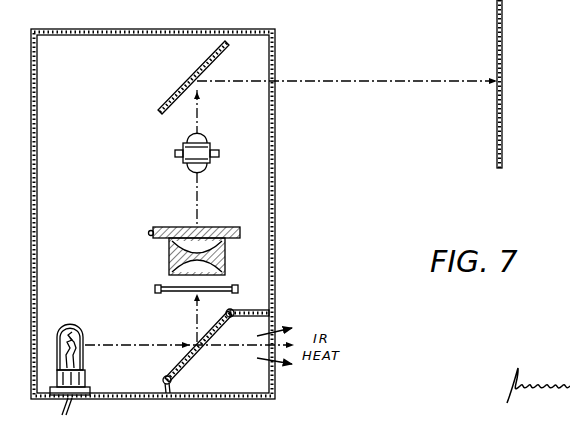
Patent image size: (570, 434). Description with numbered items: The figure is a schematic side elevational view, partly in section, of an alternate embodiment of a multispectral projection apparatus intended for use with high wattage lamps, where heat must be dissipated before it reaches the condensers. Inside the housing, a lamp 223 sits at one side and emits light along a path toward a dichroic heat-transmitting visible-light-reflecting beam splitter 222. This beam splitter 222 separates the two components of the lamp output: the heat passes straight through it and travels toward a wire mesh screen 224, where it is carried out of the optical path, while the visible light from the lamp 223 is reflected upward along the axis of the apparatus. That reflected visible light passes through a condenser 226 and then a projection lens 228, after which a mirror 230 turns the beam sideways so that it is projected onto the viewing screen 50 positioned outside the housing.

The viewing screen 50 is at (502, 146).
The dichroic heat-transmitting visible-light-reflecting beam splitter 222 is at (182, 370).
The lamp 223 is at (73, 327).
The wire mesh screen 224 is at (275, 324).
The condenser 226 is at (168, 255).
The projection lens 228 is at (185, 165).
The mirror 230 is at (211, 60).